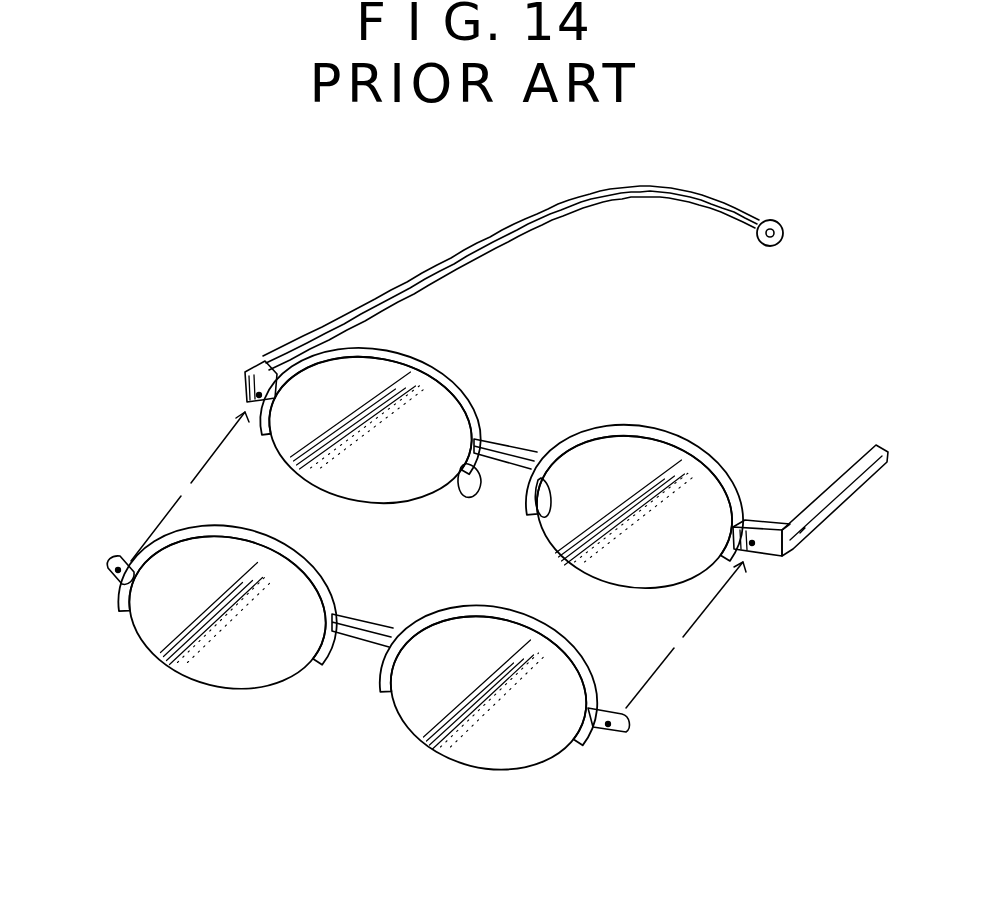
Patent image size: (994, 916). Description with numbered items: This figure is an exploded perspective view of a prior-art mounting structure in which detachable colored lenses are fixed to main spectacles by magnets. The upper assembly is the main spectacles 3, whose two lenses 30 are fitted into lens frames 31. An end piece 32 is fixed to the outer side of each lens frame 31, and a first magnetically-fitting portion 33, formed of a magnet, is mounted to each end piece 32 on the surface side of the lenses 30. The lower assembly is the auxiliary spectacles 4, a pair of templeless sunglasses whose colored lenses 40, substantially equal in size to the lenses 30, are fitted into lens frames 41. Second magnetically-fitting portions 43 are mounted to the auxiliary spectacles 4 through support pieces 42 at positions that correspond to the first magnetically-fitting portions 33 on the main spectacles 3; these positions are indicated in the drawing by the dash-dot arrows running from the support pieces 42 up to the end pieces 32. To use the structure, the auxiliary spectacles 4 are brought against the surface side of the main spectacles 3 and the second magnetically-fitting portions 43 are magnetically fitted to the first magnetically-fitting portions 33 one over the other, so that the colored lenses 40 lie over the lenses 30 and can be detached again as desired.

The main spectacles 3 is at (528, 392).
The lenses 30 is at (390, 490).
The lens frames 31 is at (440, 378).
The end piece 32 is at (258, 368).
The first magnetically-fitting portions 33 is at (250, 402).
The auxiliary spectacles 4 is at (338, 713).
The colored lenses 40 is at (178, 660).
The lens frames 41 is at (248, 545).
The support pieces 42 is at (120, 558).
The second magnetically-fitting portions 43 is at (115, 580).